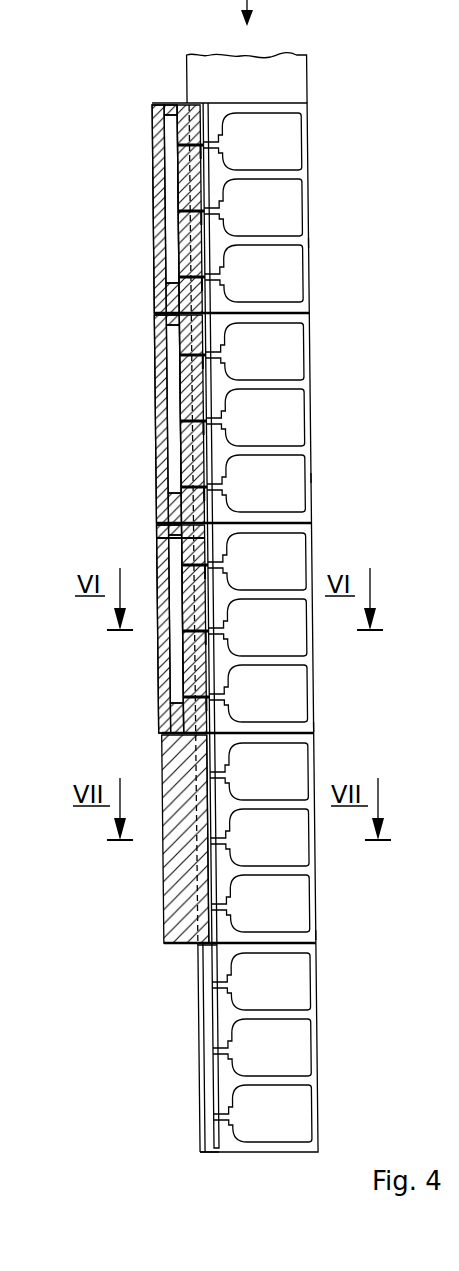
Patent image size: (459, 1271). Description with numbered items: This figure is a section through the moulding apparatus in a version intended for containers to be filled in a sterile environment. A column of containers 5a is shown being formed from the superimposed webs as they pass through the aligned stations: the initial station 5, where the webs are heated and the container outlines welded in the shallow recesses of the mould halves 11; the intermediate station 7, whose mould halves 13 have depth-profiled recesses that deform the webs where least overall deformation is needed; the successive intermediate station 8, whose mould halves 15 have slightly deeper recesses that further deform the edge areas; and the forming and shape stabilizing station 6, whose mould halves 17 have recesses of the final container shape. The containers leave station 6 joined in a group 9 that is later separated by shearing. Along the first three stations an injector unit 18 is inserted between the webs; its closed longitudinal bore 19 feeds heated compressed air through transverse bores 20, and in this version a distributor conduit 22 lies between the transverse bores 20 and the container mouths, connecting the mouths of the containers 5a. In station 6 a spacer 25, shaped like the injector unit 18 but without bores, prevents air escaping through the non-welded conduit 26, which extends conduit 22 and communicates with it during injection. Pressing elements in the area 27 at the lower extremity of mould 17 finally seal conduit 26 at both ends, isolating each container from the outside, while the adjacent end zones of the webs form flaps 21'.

The initial station 5 is at (320, 181).
The container 5a is at (298, 1063).
The forming and shape stabilizing station 6 is at (326, 878).
The intermediate station 7 is at (324, 387).
The successive intermediate station 8 is at (326, 646).
The group 9 is at (332, 1074).
The mould half 11 is at (310, 243).
The mould half 13 is at (318, 478).
The mould half 15 is at (318, 727).
The mould half 17 is at (320, 935).
The injector unit 18 is at (134, 148).
The longitudinal bore 19 is at (178, 250).
The transverse bore 20 is at (180, 162).
The distributor conduit 22 is at (168, 538).
The spacer 25 is at (135, 917).
The conduit 26 is at (198, 872).
The area of pressing elements 27 is at (203, 953).
The flap 21' is at (153, 1178).